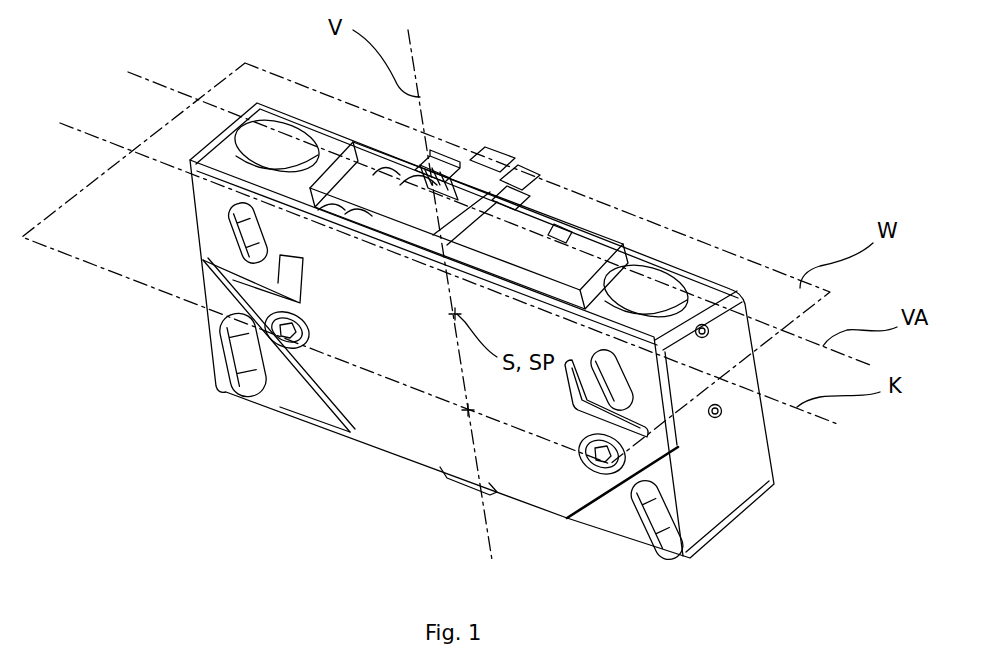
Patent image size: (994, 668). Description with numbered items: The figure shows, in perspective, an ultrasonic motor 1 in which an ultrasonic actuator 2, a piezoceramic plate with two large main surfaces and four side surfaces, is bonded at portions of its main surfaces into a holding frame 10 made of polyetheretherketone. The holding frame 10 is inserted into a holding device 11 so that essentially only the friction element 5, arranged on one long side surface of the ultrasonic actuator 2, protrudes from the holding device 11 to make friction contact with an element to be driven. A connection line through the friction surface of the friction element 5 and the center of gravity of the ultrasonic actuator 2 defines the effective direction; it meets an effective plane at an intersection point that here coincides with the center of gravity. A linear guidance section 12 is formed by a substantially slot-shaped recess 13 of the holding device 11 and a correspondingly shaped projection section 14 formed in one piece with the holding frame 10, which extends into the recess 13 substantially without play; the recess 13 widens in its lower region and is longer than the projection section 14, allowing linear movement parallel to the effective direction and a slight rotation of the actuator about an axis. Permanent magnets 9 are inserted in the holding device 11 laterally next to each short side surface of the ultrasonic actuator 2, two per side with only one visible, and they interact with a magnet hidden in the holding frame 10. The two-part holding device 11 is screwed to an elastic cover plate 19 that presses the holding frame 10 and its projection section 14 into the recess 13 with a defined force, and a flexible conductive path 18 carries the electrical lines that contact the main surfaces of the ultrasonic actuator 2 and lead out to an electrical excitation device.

The ultrasonic motor 1 is at (742, 93).
The ultrasonic actuator 2 is at (565, 262).
The friction element 5 is at (437, 172).
The permanent magnets 9 is at (263, 135).
The holding frame 10 is at (557, 240).
The holding device 11 is at (727, 449).
The linear guidance section 12 is at (492, 148).
The slot-shaped recess 13 is at (534, 176).
The projection section 14 is at (503, 187).
The flexible conductive path 18 is at (487, 477).
The cover plate 19 is at (403, 422).